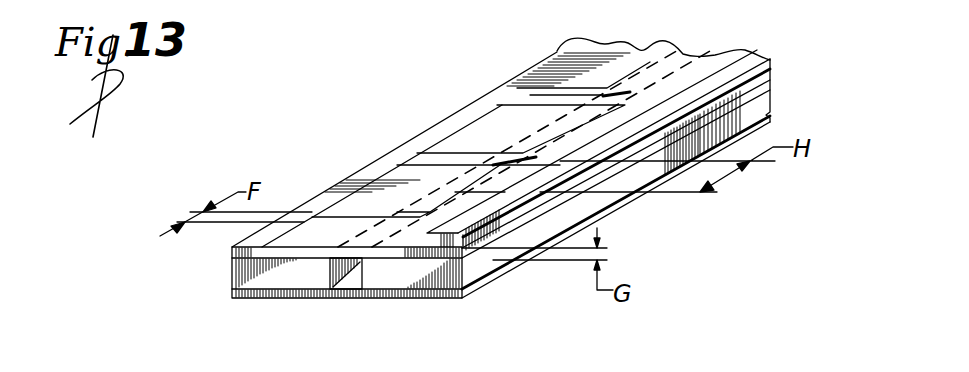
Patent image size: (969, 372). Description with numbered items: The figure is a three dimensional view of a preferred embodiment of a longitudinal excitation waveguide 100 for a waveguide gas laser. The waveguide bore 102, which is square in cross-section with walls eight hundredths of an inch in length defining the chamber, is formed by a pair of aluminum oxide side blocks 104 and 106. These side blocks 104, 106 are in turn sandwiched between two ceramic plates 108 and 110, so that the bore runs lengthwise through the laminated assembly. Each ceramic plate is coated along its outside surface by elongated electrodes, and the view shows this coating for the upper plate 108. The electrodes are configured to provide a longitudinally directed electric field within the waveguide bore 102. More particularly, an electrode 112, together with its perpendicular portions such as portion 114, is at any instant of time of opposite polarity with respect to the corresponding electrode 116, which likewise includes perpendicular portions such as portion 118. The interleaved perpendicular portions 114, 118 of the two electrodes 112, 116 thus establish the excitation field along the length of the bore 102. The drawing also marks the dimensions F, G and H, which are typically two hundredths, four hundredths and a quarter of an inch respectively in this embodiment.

The longitudinal excitation waveguide 100 is at (336, 160).
The waveguide bore 102 is at (347, 290).
The aluminum oxide side block 104 is at (250, 266).
The aluminum oxide side block 106 is at (467, 298).
The upper ceramic plate 108 is at (229, 250).
The ceramic plate 110 is at (422, 296).
The electrode 112 is at (452, 124).
The perpendicular portion 114 is at (546, 98).
The electrode 116 is at (732, 78).
The perpendicular portion 118 is at (588, 123).